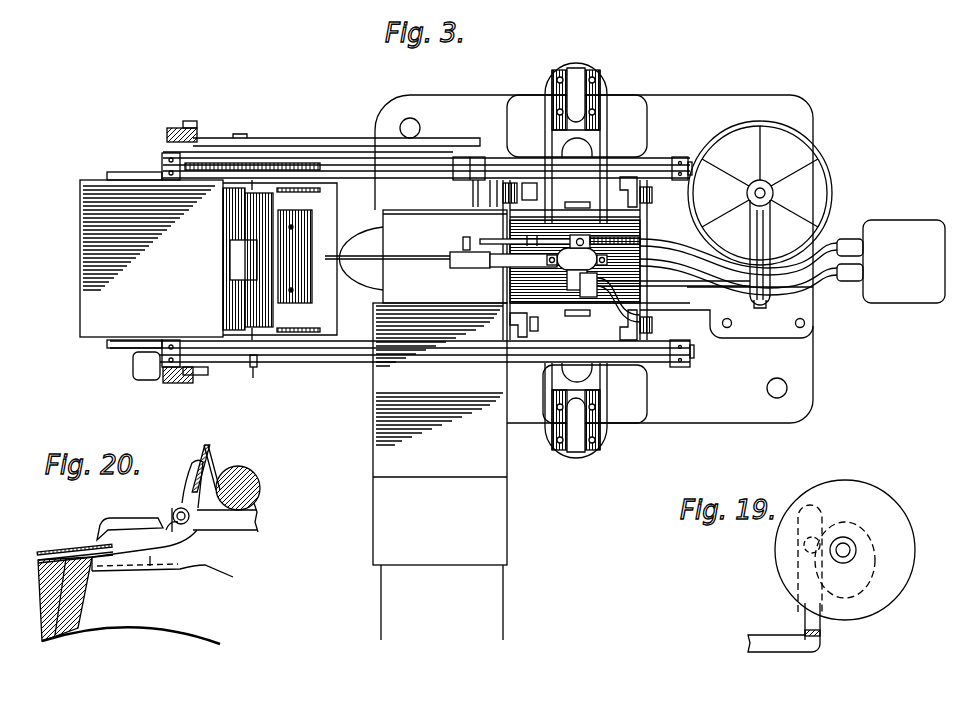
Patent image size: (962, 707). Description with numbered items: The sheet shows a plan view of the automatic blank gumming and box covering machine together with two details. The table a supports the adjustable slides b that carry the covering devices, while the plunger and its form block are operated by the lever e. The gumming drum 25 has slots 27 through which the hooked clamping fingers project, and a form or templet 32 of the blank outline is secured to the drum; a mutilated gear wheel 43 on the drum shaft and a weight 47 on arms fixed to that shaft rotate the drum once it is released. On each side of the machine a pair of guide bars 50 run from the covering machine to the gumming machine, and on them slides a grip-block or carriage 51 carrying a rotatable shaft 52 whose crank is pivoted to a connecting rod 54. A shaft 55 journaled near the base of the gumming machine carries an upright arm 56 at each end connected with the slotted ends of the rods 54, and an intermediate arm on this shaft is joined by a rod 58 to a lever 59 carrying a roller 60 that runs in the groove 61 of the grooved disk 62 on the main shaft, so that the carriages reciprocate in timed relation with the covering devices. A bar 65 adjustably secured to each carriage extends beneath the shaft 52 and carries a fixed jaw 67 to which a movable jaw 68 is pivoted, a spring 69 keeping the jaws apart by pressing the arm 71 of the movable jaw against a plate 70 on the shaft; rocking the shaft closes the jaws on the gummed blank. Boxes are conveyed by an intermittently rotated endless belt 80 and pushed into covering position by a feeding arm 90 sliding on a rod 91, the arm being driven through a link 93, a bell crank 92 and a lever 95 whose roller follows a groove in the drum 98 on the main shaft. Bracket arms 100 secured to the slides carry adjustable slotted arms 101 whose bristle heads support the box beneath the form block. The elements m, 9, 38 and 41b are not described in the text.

In FIG. 3, the table a is at (594, 259).
In FIG. 3, the adjustable slides b is at (358, 283).
In FIG. 3, the lever e is at (618, 290).
In FIG. 3, the motor housing m is at (151, 258).
In FIG. 3, the hand wheel hub and lever 9 is at (767, 187).
In FIG. 3, the drum 98 is at (832, 196).
In FIG. 3, the drum 25 is at (272, 333).
In FIG. 20, the drum 25 is at (53, 599).
In FIG. 3, the slots 27 is at (275, 308).
In FIG. 20, the slots 27 is at (137, 587).
In FIG. 3, the form or templet 32 is at (240, 259).
In FIG. 20, the form or templet 32 is at (63, 557).
In FIG. 3, the pin 38 is at (254, 378).
In FIG. 3, the stop block 41b is at (138, 380).
In FIG. 3, the mutilated gear wheel 43 is at (298, 163).
In FIG. 3, the weight 47 is at (310, 232).
In FIG. 3, the guide bars 50 is at (343, 158).
In FIG. 3, the grip-block or carriage 51 is at (479, 168).
In FIG. 3, the rotatable shaft 52 is at (474, 192).
In FIG. 20, the rotatable shaft 52 is at (259, 488).
In FIG. 3, the connecting rod 54 is at (378, 155).
In FIG. 3, the shaft 55 is at (200, 375).
In FIG. 3, the upright arm 56 is at (186, 131).
In FIG. 19, the rod 58 is at (784, 636).
In FIG. 19, the lever 59 is at (822, 628).
In FIG. 19, the roller 60 is at (806, 548).
In FIG. 19, the groove 61 is at (872, 565).
In FIG. 19, the grooved disk 62 is at (845, 550).
In FIG. 20, the bar 65 is at (259, 521).
In FIG. 20, the fixed jaw 67 is at (152, 566).
In FIG. 20, the movable jaw 68 is at (125, 518).
In FIG. 20, the spring 69 is at (174, 508).
In FIG. 20, the plate 70 is at (215, 451).
In FIG. 20, the arm 71 is at (191, 484).
In FIG. 3, the endless belt 80 is at (440, 425).
In FIG. 3, the feeding arm 90 is at (481, 265).
In FIG. 3, the rod 91 is at (410, 258).
In FIG. 3, the bell crank 92 is at (571, 243).
In FIG. 3, the link 93 is at (526, 237).
In FIG. 3, the lever 95 is at (608, 243).
In FIG. 3, the bracket arms 100 is at (594, 186).
In FIG. 3, the slotted arm 101 is at (594, 204).